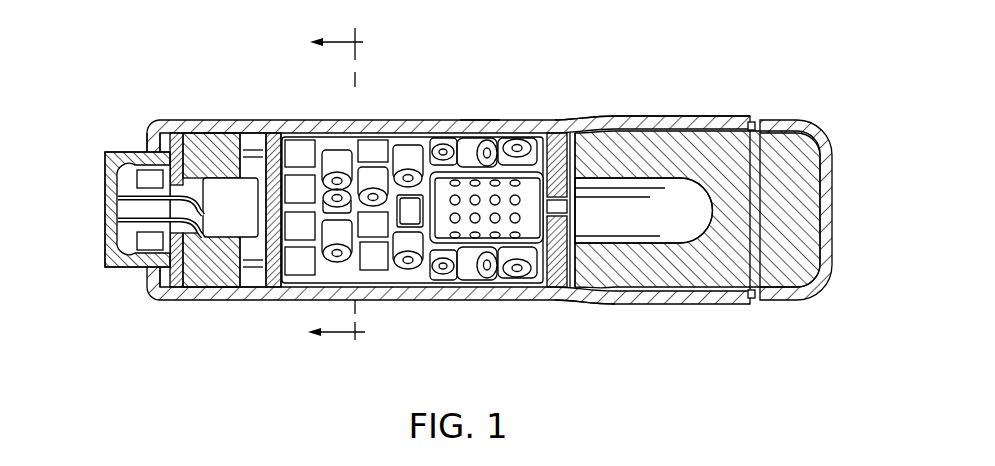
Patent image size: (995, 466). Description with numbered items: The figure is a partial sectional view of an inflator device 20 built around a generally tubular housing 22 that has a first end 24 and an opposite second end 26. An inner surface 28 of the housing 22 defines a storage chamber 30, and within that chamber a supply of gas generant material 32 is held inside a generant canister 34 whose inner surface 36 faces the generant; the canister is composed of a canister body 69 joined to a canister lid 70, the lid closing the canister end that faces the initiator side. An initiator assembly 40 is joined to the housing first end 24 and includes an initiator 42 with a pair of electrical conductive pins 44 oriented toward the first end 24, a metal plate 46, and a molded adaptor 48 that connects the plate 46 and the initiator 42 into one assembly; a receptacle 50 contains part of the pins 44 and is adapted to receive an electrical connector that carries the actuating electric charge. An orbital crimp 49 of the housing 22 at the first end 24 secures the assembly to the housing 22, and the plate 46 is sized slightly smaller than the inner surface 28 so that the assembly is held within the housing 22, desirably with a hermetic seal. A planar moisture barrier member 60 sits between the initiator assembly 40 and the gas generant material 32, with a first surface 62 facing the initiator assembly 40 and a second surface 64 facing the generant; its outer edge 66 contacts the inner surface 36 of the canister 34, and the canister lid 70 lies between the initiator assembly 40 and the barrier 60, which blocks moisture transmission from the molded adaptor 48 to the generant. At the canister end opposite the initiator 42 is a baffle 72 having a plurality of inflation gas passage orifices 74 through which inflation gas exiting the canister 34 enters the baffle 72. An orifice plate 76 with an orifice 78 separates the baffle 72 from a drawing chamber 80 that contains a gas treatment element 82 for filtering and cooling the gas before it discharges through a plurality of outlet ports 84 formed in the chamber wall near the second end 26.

The inflator device 20 is at (221, 92).
The housing 22 is at (408, 118).
The first end 24 is at (158, 300).
The second end 26 is at (823, 128).
The inner surface 28 is at (238, 118).
The storage chamber 30 is at (369, 118).
The gas generant material 32 is at (526, 160).
The generant canister 34 is at (478, 112).
The inner surface 36 is at (413, 283).
The initiator assembly 40 is at (203, 118).
The initiator 42 is at (230, 207).
The electrical conductive pins 44 is at (118, 219).
The plate 46 is at (157, 130).
The molded adaptor 48 is at (218, 287).
The orbital crimp 49 is at (152, 143).
The receptacle 50 is at (107, 180).
The moisture barrier member 60 is at (283, 118).
The first surface 62 is at (254, 118).
The second surface 64 is at (309, 118).
The outer edge 66 is at (273, 287).
The canister body 69 is at (367, 283).
The canister lid 70 is at (248, 287).
The baffle 72 is at (553, 140).
The inflation gas passage orifices 74 is at (514, 245).
The orifice plate 76 is at (603, 123).
The orifice 78 is at (563, 213).
The drawing chamber 80 is at (698, 122).
The gas treatment element 82 is at (808, 168).
The outlet ports 84 is at (767, 128).